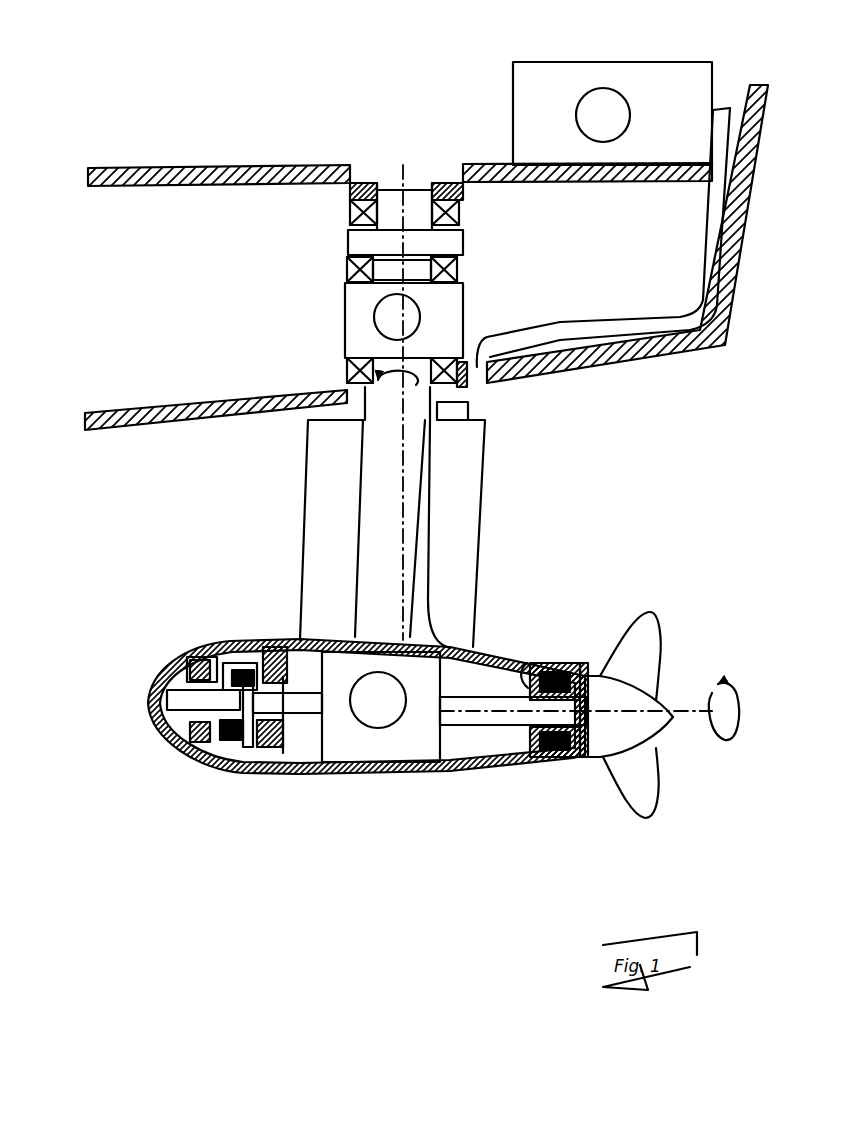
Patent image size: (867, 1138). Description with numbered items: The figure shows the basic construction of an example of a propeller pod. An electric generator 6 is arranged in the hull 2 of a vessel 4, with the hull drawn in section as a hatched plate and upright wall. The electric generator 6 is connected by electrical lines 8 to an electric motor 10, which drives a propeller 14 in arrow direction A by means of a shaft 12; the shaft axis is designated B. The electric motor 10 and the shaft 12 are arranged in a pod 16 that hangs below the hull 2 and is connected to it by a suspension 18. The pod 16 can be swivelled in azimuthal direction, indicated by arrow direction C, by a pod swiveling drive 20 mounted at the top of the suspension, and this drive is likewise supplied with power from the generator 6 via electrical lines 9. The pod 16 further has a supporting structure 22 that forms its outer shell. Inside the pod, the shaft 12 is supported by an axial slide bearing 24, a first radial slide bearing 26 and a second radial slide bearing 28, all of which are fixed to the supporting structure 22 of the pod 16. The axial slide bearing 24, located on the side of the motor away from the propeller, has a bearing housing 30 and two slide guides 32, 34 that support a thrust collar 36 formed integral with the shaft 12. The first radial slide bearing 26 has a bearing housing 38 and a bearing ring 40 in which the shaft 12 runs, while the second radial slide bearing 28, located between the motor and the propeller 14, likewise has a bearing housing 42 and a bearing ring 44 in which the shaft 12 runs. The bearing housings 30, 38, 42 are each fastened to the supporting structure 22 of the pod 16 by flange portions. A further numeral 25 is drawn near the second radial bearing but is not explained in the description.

The hull 2 is at (672, 340).
The vessel 4 is at (153, 44).
The electric generator 6 is at (652, 75).
The electrical lines 8 is at (470, 403).
The electrical lines 9 is at (535, 337).
The electric motor 10 is at (366, 755).
The shaft 12 is at (483, 717).
The propeller 14 is at (655, 633).
The pod 16 is at (337, 755).
The suspension 18 is at (280, 498).
The pod swiveling drive 20 is at (343, 327).
The supporting structure 22 is at (420, 770).
The axial slide bearing 24 is at (240, 765).
The bearing 25 is at (543, 760).
The first radial slide bearing 26 is at (205, 745).
The second radial slide bearing 28 is at (573, 757).
The bearing housing 30 is at (270, 647).
The slide guide 32 is at (248, 655).
The slide guide 34 is at (232, 648).
The thrust collar 36 is at (273, 770).
The bearing housing 38 is at (172, 738).
The bearing ring 40 is at (170, 732).
The bearing housing 42 is at (540, 668).
The bearing ring 44 is at (581, 668).
The arrow direction A is at (729, 718).
The shaft axis B is at (720, 716).
The arrow direction C is at (398, 395).